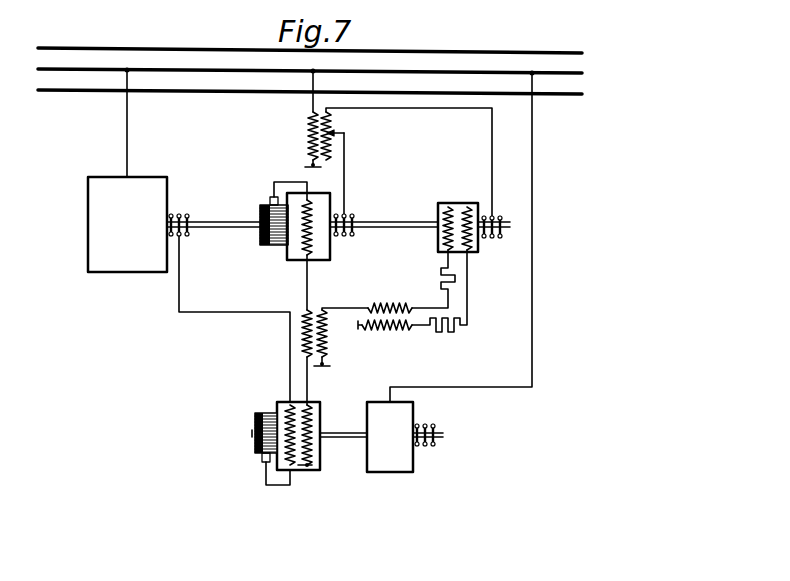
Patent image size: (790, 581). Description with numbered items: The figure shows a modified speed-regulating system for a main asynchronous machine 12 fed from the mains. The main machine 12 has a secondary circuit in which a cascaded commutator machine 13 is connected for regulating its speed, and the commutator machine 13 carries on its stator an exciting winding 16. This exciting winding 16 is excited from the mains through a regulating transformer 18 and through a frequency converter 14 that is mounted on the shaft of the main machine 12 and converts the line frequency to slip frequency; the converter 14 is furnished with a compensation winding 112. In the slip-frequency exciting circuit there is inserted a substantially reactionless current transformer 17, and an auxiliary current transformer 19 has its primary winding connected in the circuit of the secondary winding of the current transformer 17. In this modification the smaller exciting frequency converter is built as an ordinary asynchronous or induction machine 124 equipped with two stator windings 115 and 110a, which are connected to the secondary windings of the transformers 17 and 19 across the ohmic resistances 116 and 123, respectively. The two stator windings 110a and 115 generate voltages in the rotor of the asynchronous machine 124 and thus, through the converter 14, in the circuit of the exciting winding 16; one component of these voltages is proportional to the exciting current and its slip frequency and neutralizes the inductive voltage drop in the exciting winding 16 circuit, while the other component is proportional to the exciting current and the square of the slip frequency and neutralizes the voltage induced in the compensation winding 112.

The main asynchronous machine 12 is at (167, 177).
The regulating transformer 18 is at (306, 134).
The asynchronous machine 124 is at (455, 203).
The compensation winding 112 is at (305, 244).
The frequency converter 14 is at (330, 260).
The stator winding 115 is at (438, 241).
The stator exciter winding 110a is at (472, 245).
The ohmic resistance 116 is at (441, 280).
The auxiliary current transformer 19 is at (378, 306).
The current transformer 17 is at (327, 346).
The ohmic resistance 123 is at (437, 333).
The exciting winding 16 is at (310, 420).
The cascaded commutator machine 13 is at (320, 468).